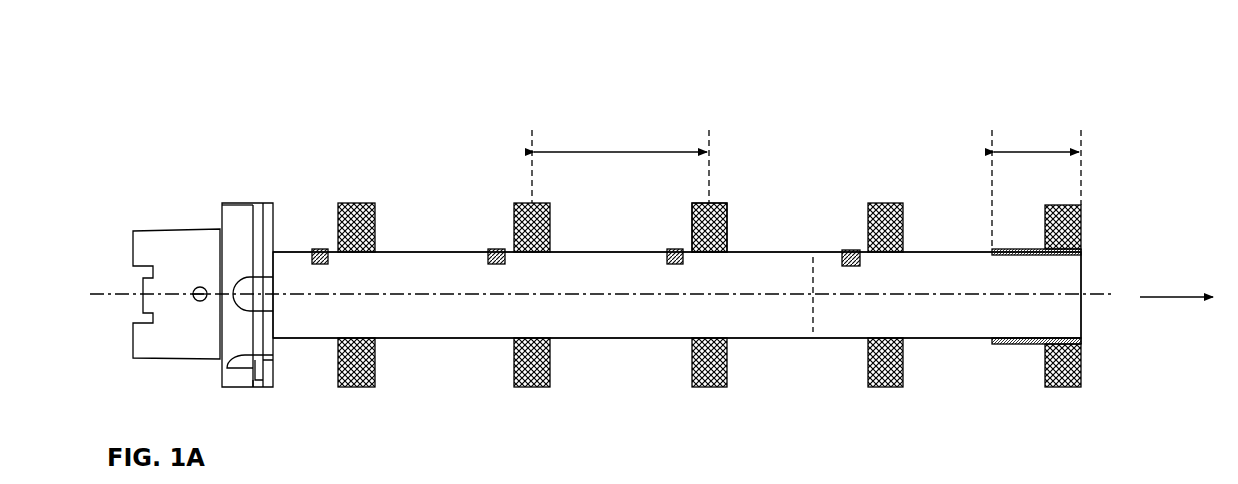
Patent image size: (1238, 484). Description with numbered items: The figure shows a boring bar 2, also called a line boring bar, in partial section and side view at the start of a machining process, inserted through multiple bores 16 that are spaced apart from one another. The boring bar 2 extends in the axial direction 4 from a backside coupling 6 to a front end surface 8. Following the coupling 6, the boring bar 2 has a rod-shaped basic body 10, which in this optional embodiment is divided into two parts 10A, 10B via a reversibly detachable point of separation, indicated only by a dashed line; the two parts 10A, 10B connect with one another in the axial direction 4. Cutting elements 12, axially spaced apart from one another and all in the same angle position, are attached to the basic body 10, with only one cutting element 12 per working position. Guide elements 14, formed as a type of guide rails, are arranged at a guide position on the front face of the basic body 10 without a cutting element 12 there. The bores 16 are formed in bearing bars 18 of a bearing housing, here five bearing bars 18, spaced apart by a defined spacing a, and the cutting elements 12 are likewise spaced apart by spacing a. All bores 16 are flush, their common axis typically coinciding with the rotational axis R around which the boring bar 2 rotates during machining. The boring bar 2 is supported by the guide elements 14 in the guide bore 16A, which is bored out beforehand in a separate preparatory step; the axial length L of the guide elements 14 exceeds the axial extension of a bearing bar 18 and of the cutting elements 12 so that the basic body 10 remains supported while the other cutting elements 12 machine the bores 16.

The boring bar 2 is at (1135, 131).
The axial direction 4 is at (1170, 297).
The backside coupling 6 is at (175, 240).
The front end surface 8 is at (1081, 313).
The basic body 10 is at (600, 323).
The front part of basic body 10A is at (915, 318).
The rear part of basic body 10B is at (655, 278).
The cutting element 12 is at (318, 248).
The guide element 14 is at (1010, 344).
The bore 16 is at (727, 252).
The guide bore 16A is at (1081, 340).
The bearing bar 18 is at (708, 387).
The rotational axis R is at (773, 294).
The spacing a is at (615, 152).
The axial length L is at (1035, 152).